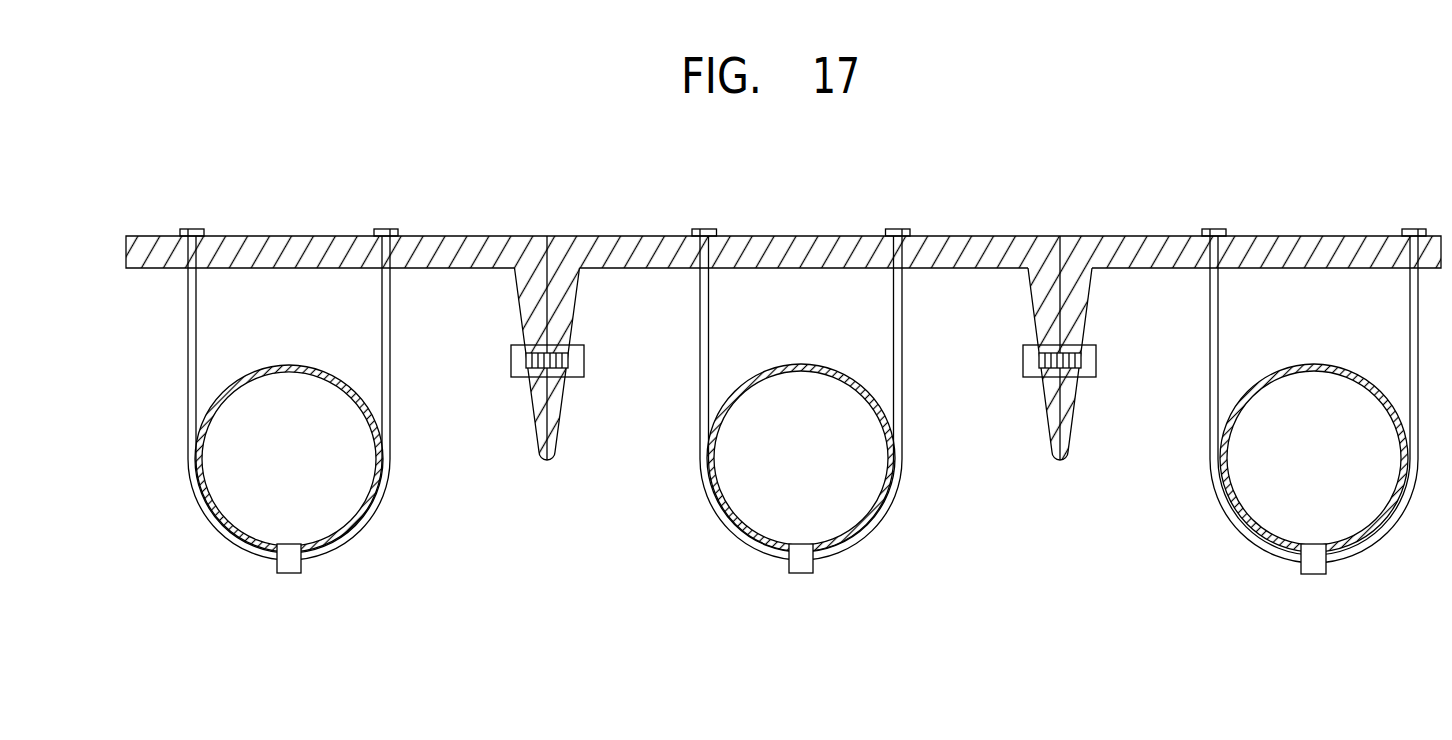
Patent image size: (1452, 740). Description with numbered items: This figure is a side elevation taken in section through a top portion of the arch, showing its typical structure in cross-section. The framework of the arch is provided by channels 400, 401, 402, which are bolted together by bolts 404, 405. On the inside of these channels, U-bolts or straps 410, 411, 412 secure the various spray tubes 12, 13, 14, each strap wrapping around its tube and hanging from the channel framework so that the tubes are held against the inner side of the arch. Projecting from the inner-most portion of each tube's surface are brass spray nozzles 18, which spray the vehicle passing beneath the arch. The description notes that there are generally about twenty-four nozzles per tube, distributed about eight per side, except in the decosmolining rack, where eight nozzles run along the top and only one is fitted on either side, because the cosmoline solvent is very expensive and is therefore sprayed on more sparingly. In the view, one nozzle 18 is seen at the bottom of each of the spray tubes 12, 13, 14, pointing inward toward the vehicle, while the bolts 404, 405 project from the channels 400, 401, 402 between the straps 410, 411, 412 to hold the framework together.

The channel 400 is at (1320, 236).
The channel 401 is at (963, 236).
The channel 402 is at (482, 236).
The bolt 404 is at (568, 378).
The bolt 405 is at (1085, 377).
The U-bolt or strap 410 is at (390, 327).
The U-bolt or strap 411 is at (902, 358).
The U-bolt or strap 412 is at (1408, 337).
The spray tube 12 is at (327, 535).
The spray tube 13 is at (873, 508).
The spray tube 14 is at (1380, 515).
The brass spray nozzle 18 is at (289, 573).